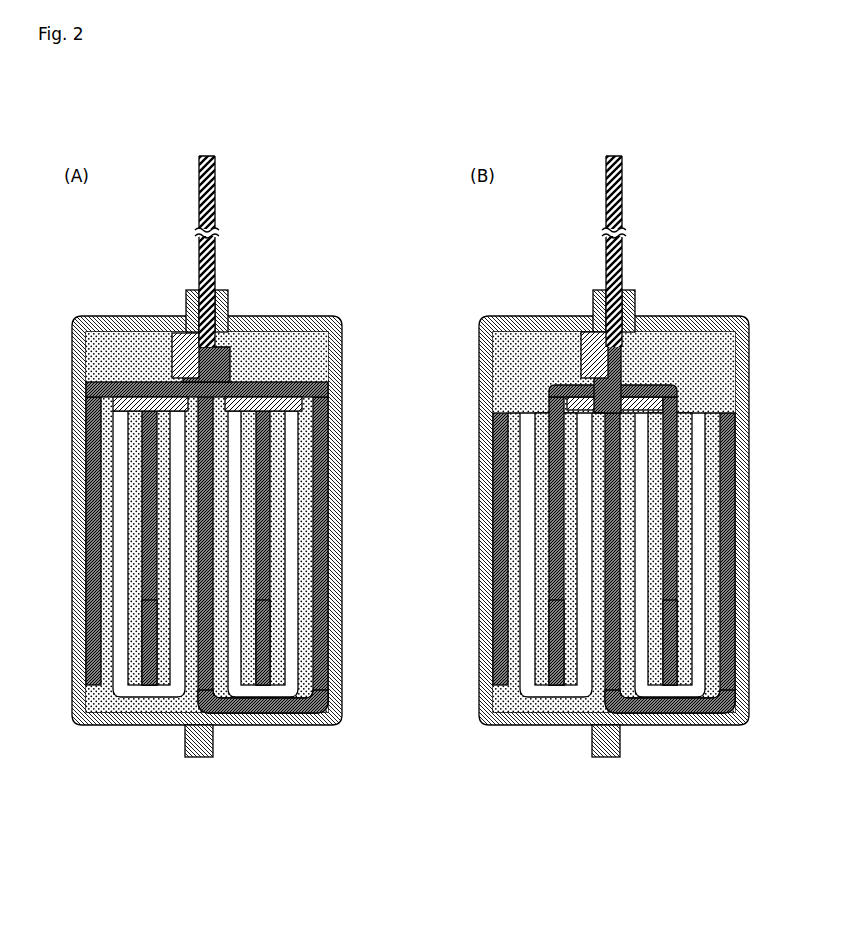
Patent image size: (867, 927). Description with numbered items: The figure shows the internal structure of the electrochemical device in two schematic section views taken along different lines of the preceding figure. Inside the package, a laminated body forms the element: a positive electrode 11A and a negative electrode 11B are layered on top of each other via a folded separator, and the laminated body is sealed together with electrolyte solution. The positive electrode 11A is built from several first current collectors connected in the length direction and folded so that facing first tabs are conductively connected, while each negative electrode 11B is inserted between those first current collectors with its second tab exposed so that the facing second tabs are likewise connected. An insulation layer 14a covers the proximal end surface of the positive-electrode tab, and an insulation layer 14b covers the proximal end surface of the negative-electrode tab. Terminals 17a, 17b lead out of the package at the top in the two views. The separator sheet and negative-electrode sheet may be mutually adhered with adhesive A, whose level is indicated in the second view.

The positive electrode 11A is at (233, 360).
The negative electrode 11B is at (699, 365).
The insulation layer 14a is at (293, 388).
The insulation layer 14b is at (676, 396).
The terminal 17a is at (214, 266).
The terminal 17b is at (644, 267).
The adhesive A is at (647, 424).